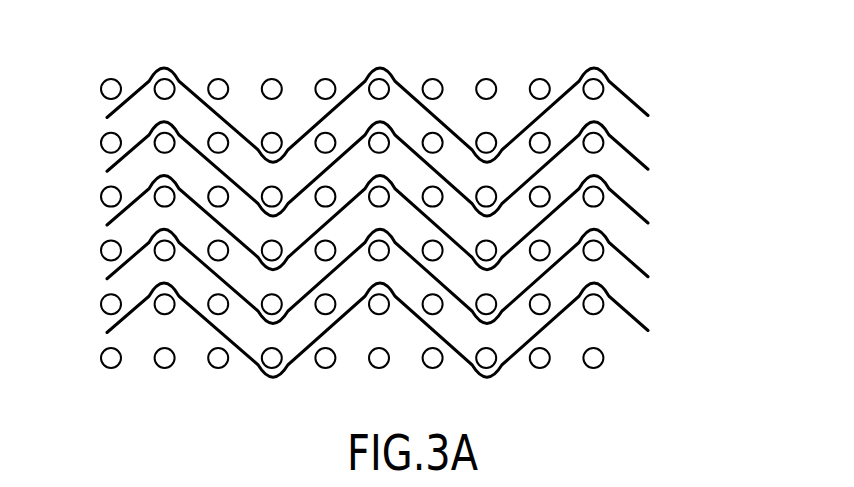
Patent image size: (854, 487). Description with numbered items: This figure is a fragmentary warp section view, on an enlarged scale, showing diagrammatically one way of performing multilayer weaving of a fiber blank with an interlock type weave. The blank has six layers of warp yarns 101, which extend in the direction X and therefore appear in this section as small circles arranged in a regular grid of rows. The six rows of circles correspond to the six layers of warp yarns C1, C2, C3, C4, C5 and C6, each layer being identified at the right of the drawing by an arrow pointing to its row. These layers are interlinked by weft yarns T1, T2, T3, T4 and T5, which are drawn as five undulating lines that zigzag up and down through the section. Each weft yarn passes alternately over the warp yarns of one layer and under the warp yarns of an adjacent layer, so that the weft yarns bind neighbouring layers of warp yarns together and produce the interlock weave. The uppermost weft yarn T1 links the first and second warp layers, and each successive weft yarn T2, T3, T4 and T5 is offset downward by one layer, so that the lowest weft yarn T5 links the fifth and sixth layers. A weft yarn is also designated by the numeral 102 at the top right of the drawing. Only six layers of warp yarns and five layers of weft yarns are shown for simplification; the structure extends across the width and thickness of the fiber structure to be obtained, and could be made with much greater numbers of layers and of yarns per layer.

The warp yarns 101 is at (594, 362).
The zigzag conductive trace 102 is at (594, 66).
The weft yarn T1 is at (108, 117).
The weft yarn T2 is at (108, 171).
The weft yarn T3 is at (108, 224).
The weft yarn T4 is at (108, 278).
The weft yarn T5 is at (108, 332).
The layer of warp yarns C1 is at (643, 88).
The layer of warp yarns C2 is at (643, 142).
The layer of warp yarns C3 is at (643, 196).
The layer of warp yarns C4 is at (643, 250).
The layer of warp yarns C5 is at (643, 304).
The layer of warp yarns C6 is at (643, 358).